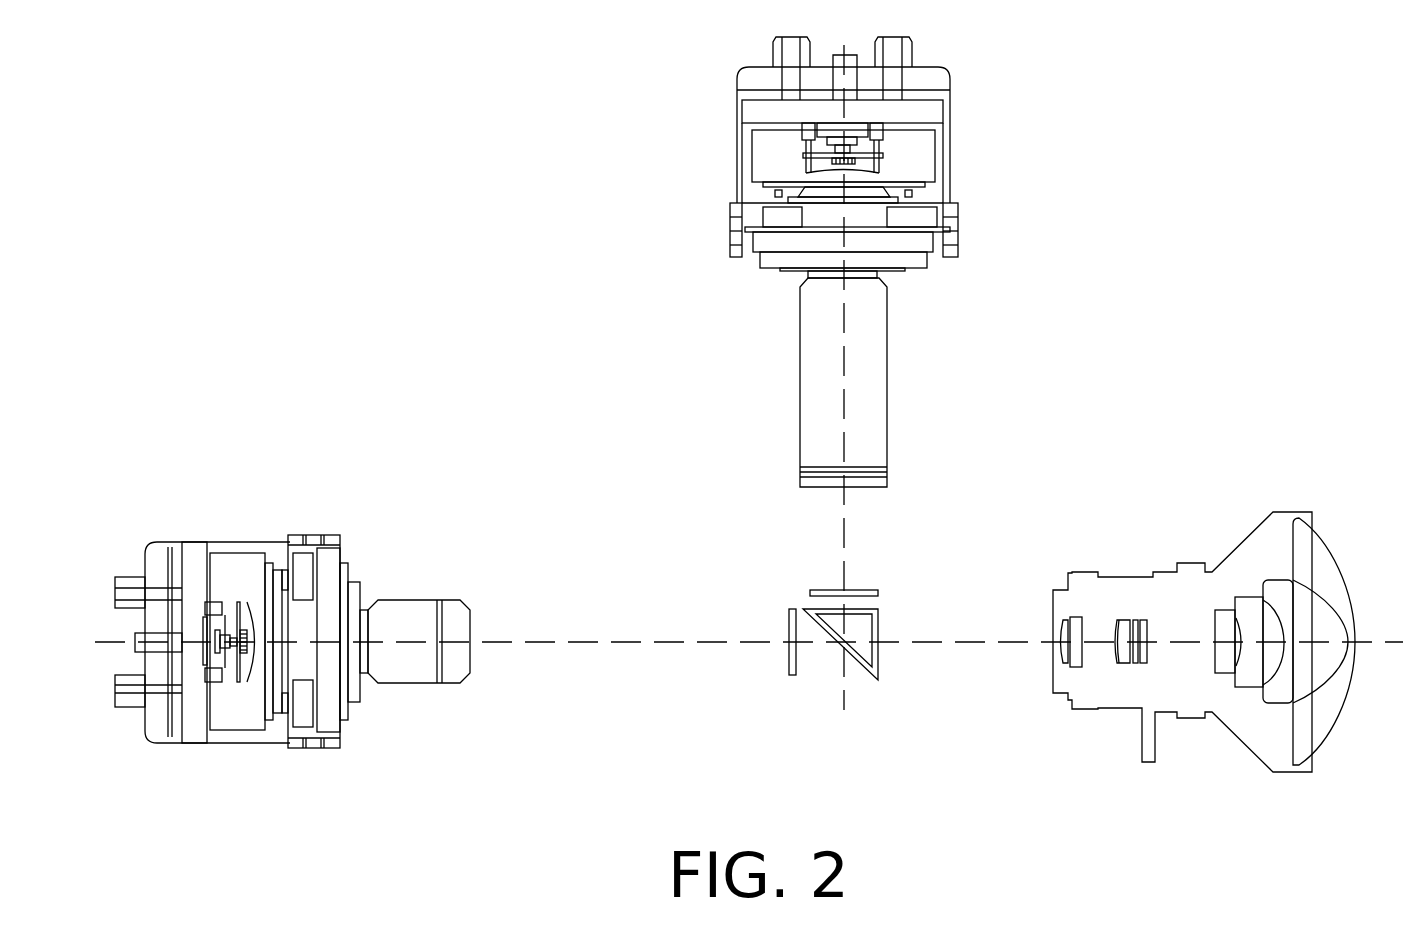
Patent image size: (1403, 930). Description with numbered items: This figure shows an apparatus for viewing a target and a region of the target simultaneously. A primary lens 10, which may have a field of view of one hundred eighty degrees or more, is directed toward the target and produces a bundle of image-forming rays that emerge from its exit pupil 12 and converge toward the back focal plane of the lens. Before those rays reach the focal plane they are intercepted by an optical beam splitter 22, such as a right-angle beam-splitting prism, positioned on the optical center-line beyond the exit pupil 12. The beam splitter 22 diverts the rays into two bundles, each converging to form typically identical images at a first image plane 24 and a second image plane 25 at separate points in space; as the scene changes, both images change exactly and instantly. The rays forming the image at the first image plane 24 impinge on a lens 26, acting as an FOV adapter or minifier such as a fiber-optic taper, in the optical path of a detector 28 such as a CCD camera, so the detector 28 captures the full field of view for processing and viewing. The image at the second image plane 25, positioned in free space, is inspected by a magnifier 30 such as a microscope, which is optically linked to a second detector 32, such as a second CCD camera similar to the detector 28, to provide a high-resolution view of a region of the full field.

The primary lens 10 is at (1198, 565).
The exit pupil 12 is at (1053, 630).
The optical beam splitter 22 is at (878, 670).
The first image plane 24 is at (789, 665).
The second image plane 25 is at (827, 590).
The lens (FOV adapter or minifier) 26 is at (415, 600).
The detector 28 is at (248, 542).
The magnifier 30 is at (800, 398).
The second detector 32 is at (950, 152).